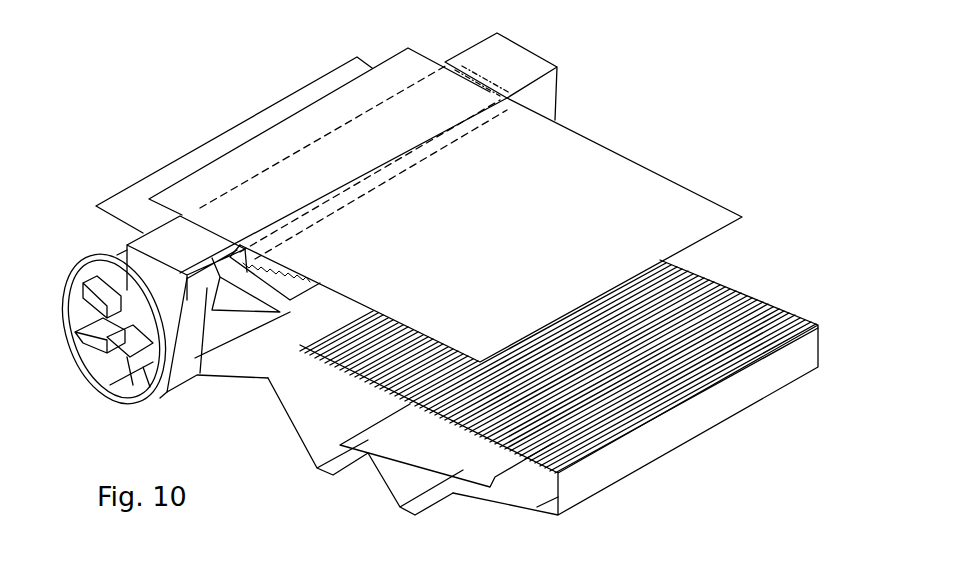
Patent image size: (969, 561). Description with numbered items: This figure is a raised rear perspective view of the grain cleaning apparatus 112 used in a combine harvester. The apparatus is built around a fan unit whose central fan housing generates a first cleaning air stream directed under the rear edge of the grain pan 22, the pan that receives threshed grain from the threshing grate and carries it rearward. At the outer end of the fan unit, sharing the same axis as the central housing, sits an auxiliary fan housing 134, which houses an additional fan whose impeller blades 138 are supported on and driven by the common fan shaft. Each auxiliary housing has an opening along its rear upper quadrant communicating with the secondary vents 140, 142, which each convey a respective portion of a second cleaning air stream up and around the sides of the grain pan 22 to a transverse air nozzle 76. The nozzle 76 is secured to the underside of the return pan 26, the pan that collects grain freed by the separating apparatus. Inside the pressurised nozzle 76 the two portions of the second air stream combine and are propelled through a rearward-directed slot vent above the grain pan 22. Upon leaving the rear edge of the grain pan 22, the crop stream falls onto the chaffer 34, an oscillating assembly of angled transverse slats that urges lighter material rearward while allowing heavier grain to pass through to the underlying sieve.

The grain pan 22 is at (167, 163).
The return pan 26 is at (725, 205).
The chaffer 34 is at (733, 278).
The transverse air nozzle 76 is at (422, 98).
The grain cleaning apparatus 112 is at (745, 79).
The auxiliary fan housing 134 is at (117, 393).
The impeller blades 138 is at (83, 335).
The secondary vent 140 is at (548, 88).
The secondary vent 142 is at (192, 348).